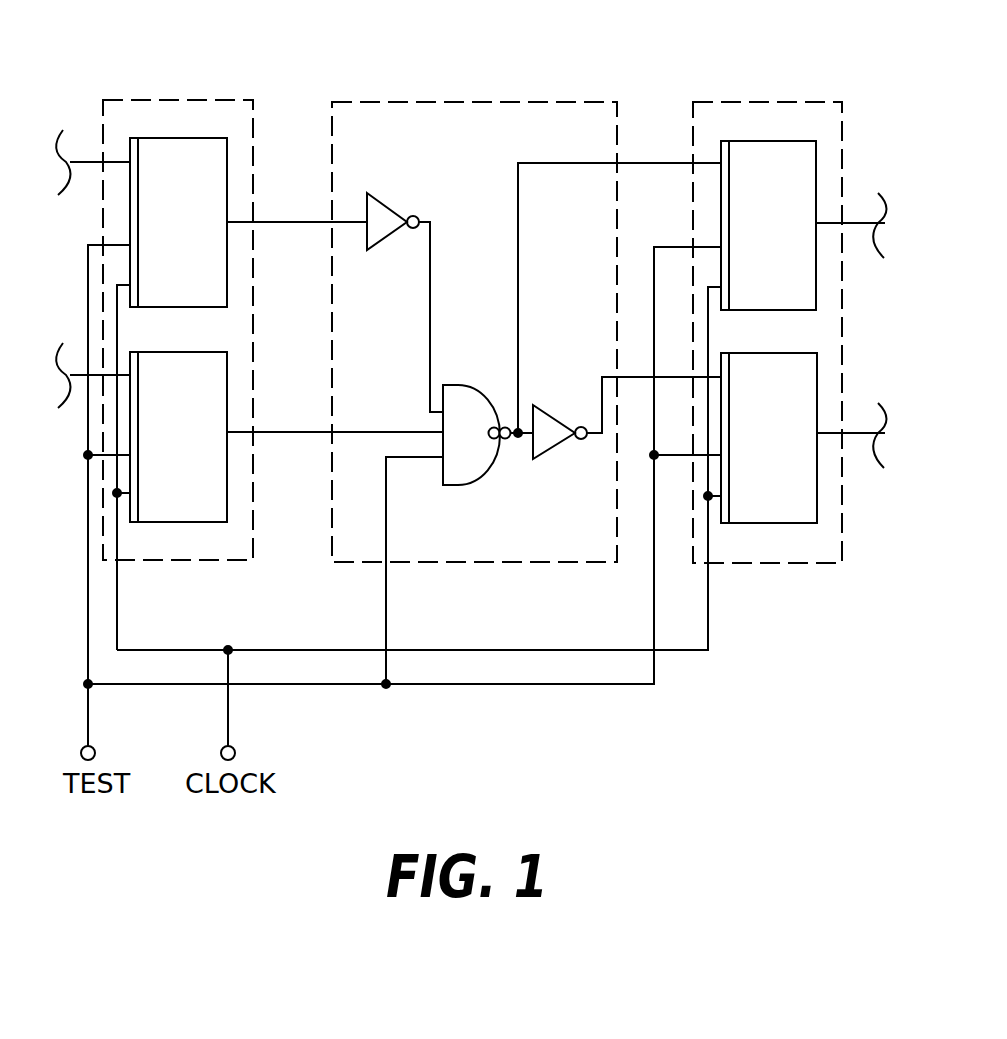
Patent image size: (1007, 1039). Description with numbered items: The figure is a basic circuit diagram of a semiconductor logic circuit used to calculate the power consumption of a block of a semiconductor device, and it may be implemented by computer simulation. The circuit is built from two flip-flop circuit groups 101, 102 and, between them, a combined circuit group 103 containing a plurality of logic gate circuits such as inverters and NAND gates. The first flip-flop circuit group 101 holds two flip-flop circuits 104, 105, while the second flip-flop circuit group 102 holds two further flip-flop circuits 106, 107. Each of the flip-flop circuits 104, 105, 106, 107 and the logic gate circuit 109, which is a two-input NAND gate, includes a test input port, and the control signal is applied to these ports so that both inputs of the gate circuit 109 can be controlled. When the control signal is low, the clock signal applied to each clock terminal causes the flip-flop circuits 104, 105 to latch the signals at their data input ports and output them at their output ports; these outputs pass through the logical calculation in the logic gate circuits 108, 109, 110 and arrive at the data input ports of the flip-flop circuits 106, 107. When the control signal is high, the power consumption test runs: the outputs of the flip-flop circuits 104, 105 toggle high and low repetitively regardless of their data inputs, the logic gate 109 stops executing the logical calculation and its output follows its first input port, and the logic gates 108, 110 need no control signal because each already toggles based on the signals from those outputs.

The flip-flop circuit group 101 is at (163, 100).
The flip-flop circuit group 102 is at (725, 102).
The combined circuit group 103 is at (438, 102).
The flip-flop circuit 104 is at (155, 138).
The flip-flop circuit 105 is at (163, 522).
The flip-flop circuit 106 is at (747, 141).
The flip-flop circuit 107 is at (742, 523).
The logic gate circuit 108 is at (387, 201).
The logic gate circuit 109 is at (483, 410).
The logic gate circuit 110 is at (567, 392).